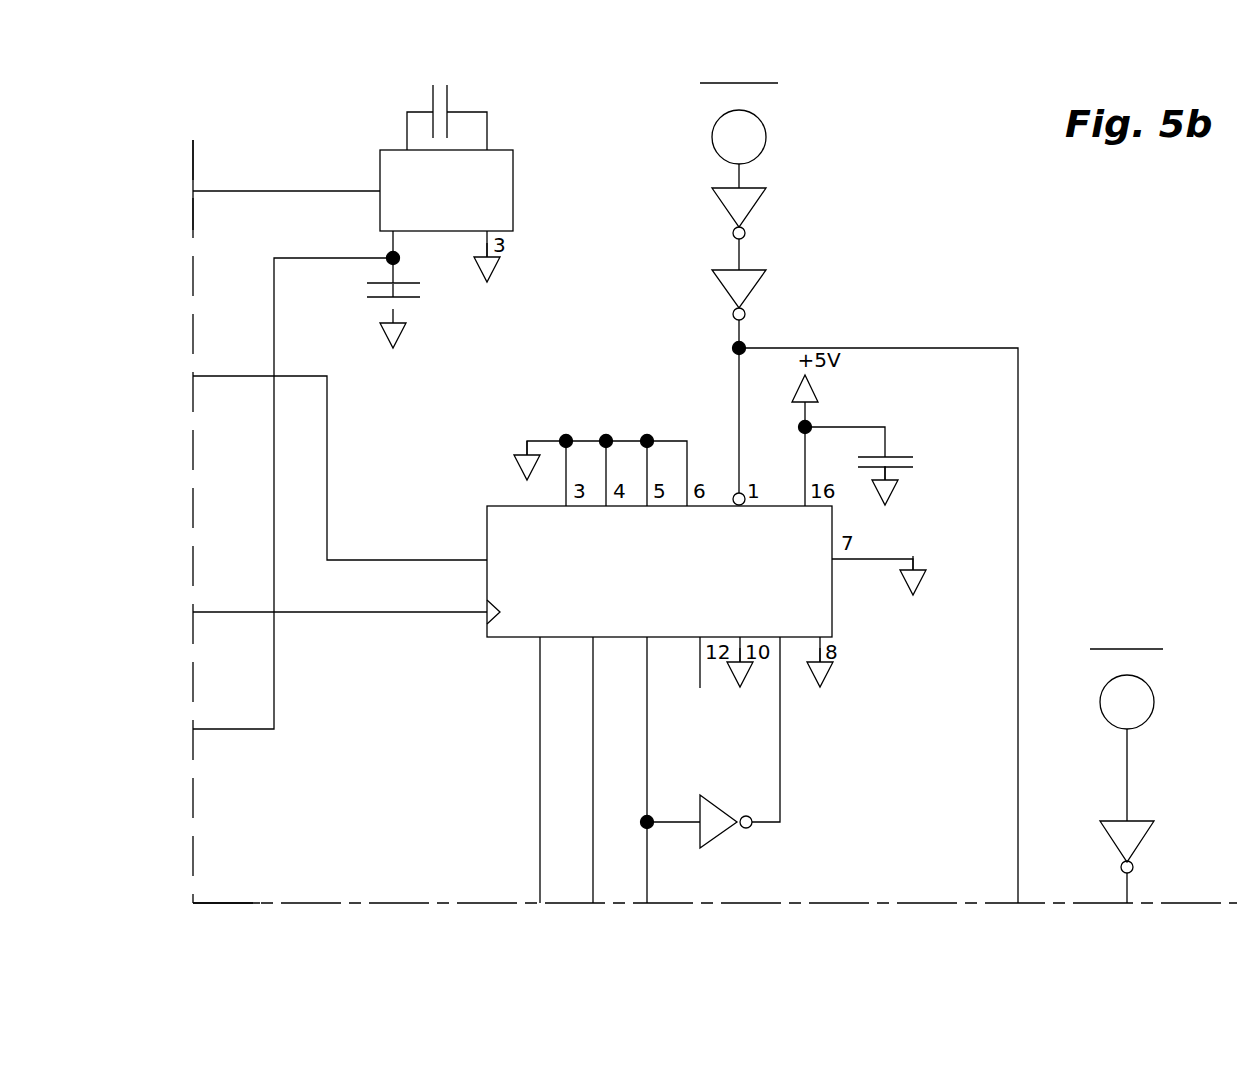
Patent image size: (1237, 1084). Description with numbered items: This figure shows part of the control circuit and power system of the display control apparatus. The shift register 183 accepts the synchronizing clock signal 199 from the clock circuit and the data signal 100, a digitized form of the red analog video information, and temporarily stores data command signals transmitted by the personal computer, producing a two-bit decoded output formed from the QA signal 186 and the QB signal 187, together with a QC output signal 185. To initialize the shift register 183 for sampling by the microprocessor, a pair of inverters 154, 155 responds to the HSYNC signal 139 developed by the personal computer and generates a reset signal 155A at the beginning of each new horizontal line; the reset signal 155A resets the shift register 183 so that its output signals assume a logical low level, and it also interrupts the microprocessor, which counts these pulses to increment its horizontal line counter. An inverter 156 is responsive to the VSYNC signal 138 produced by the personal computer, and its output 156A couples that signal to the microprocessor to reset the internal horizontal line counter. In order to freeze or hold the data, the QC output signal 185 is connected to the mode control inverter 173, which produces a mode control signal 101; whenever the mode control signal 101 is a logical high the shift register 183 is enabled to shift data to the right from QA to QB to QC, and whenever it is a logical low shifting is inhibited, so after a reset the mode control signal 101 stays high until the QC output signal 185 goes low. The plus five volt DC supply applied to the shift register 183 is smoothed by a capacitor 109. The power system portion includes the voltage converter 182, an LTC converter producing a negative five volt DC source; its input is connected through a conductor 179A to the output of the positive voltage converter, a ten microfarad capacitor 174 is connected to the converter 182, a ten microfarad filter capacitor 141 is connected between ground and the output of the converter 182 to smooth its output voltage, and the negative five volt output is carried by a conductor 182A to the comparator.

The capacitor 174 is at (432, 104).
The conductor 179A is at (278, 191).
The voltage converter 182 is at (513, 205).
The filter capacitor 141 is at (418, 297).
The conductor 182A is at (262, 729).
The data signal 100 is at (258, 377).
The synchronizing clock signal 199 is at (258, 612).
The shift register 183 is at (832, 597).
The capacitor 109 is at (902, 455).
The QA signal 186 is at (540, 707).
The QB signal 187 is at (593, 768).
The QC output signal 185 is at (648, 746).
The mode control inverter 173 is at (722, 806).
The mode control signal 101 is at (780, 776).
The HSYNC signal 139 is at (766, 143).
The inverter 154 is at (752, 208).
The inverter 155 is at (757, 283).
The reset signal 155A is at (985, 348).
The VSYNC signal 138 is at (1128, 746).
The inverter 156 is at (1100, 832).
The inverted VSYNC output 156A is at (1127, 886).